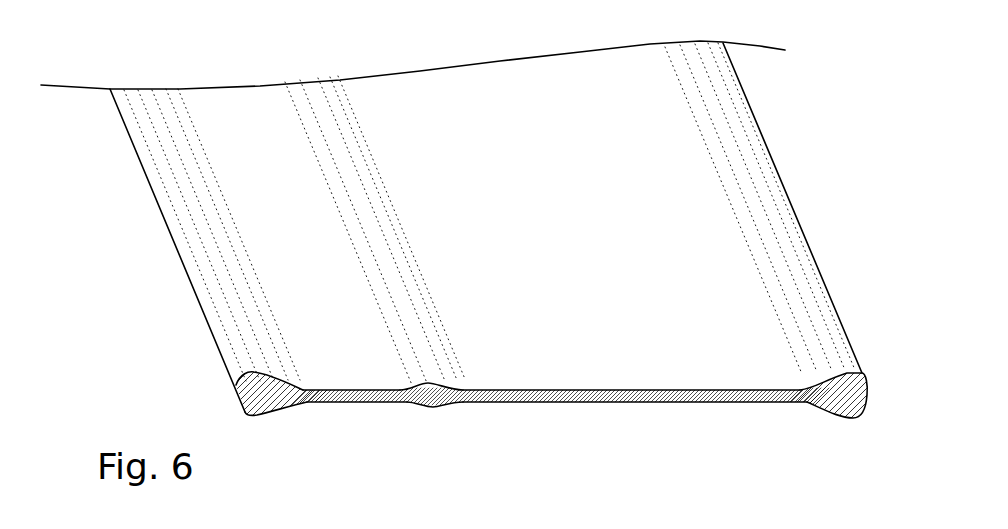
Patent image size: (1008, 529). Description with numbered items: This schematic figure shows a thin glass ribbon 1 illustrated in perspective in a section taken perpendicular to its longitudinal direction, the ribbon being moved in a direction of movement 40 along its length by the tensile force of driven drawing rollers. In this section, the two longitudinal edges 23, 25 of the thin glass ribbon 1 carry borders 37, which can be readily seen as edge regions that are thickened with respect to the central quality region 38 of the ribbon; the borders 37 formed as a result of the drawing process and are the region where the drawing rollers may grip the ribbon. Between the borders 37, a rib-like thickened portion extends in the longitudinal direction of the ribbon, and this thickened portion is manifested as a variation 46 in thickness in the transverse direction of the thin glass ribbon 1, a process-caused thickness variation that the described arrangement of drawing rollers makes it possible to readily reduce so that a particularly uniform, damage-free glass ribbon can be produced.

The thin glass ribbon 1 is at (598, 432).
The longitudinal edge 23 is at (167, 232).
The longitudinal edge 25 is at (764, 134).
The border 37 is at (280, 412).
The quality region 38 is at (430, 170).
The direction of movement 40 is at (572, 378).
The variation in thickness in the transverse direction 46 is at (433, 407).